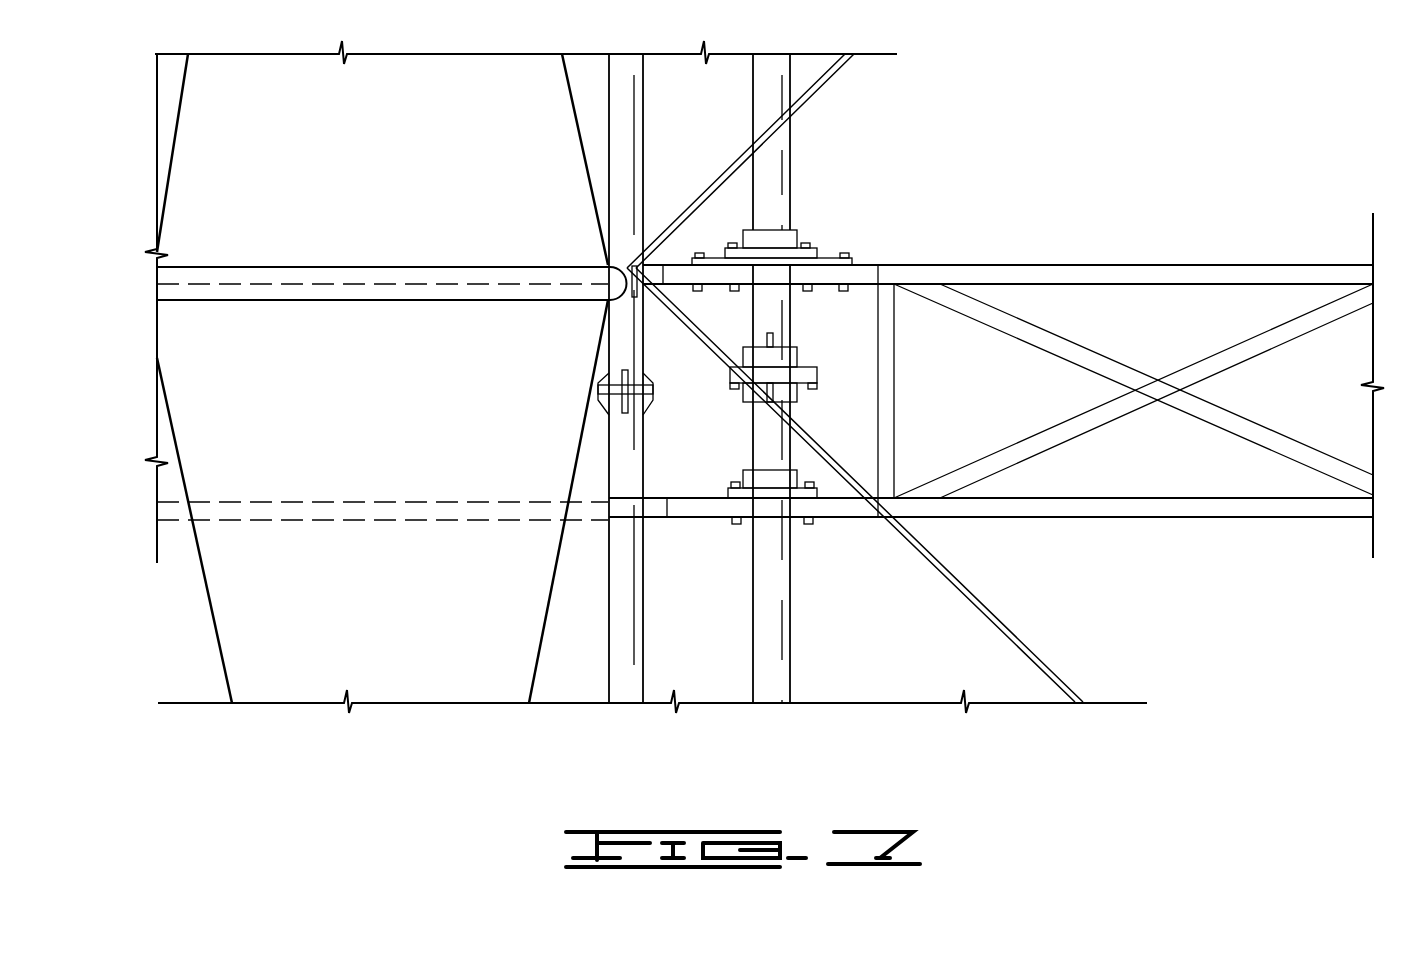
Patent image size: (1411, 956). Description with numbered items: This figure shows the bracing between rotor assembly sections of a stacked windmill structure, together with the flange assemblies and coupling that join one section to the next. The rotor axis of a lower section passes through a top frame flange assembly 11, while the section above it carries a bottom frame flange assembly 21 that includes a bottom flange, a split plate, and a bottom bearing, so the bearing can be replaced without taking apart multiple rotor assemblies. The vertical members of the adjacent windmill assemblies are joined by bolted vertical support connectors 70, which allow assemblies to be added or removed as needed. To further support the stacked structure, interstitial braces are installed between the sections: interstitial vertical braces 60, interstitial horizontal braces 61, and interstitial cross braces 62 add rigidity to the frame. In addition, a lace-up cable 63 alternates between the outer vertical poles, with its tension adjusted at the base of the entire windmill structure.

The top frame flange assembly 11 is at (818, 560).
The bottom frame flange assembly 21 is at (838, 212).
The interstitial vertical braces 60 is at (888, 372).
The interstitial horizontal braces 61 is at (1205, 272).
The interstitial cross braces 62 is at (1268, 432).
The lace-up cable 63 is at (1033, 652).
The vertical support connectors 70 is at (607, 385).